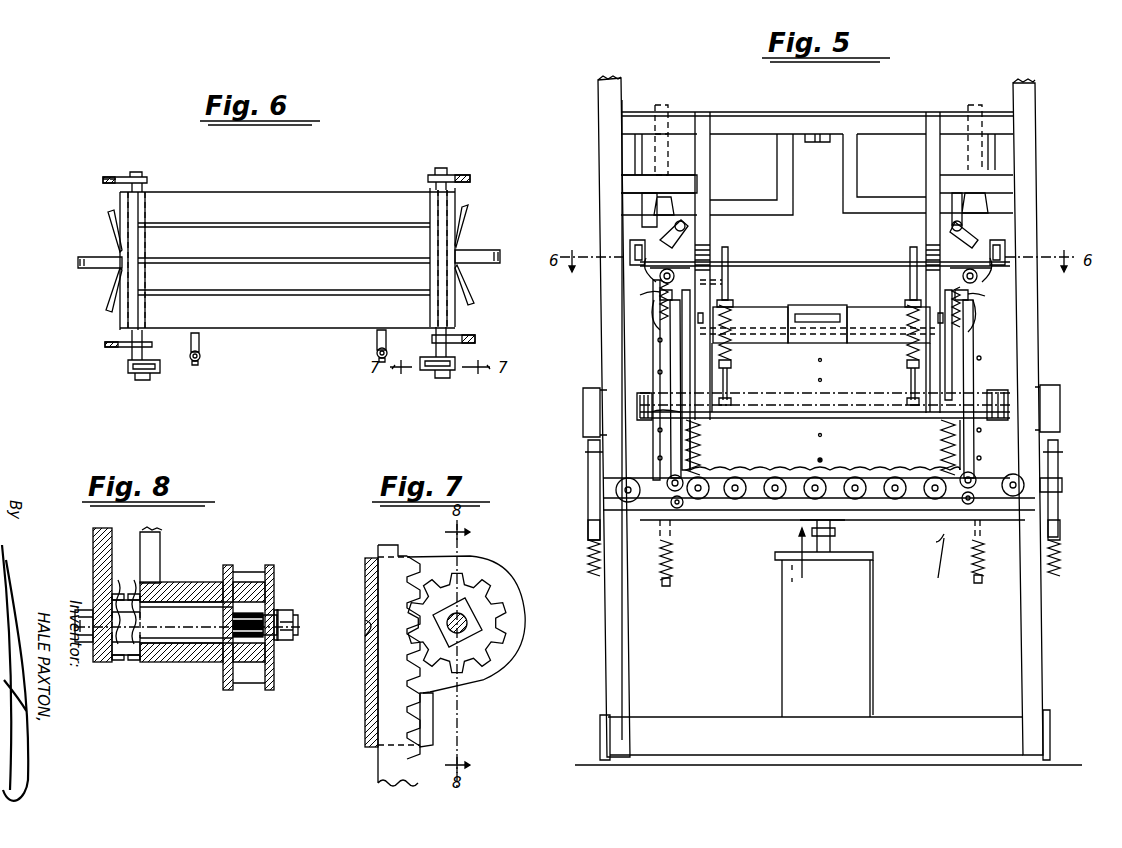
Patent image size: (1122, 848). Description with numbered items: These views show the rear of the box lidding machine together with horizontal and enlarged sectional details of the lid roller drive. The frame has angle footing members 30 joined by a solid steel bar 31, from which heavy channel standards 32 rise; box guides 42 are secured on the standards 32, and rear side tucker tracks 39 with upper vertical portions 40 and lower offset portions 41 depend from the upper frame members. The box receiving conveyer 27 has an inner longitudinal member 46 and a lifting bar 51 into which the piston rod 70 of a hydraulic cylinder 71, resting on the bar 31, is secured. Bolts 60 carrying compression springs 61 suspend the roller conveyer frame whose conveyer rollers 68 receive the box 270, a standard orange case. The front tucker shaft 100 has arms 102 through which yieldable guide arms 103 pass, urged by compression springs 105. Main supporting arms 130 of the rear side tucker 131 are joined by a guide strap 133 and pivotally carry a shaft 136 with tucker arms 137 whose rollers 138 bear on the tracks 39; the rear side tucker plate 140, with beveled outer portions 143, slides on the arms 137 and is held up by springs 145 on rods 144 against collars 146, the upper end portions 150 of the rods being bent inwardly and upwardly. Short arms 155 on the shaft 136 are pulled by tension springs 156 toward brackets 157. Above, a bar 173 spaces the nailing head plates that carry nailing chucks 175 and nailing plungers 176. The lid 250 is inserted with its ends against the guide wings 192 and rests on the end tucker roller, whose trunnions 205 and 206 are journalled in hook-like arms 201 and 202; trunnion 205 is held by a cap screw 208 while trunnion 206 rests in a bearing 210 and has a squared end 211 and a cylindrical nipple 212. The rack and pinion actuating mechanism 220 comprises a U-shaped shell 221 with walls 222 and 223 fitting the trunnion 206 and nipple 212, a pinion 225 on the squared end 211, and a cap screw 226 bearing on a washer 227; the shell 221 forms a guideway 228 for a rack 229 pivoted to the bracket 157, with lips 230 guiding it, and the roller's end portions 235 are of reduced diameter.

In FIG. 5, the box receiving conveyer 27 is at (760, 558).
In FIG. 5, the angle footing members 30 is at (1046, 722).
In FIG. 5, the solid steel bar 31 is at (950, 724).
In FIG. 5, the channel standards 32 is at (1038, 598).
In FIG. 5, the rear side tucker tracks 39 is at (711, 158).
In FIG. 5, the upper vertical portions 40 is at (711, 186).
In FIG. 5, the lower offset portions 41 is at (726, 275).
In FIG. 5, the box guides 42 is at (1052, 404).
In FIG. 5, the inner longitudinal member 46 is at (730, 500).
In FIG. 5, the lifting bar 51 is at (766, 505).
In FIG. 5, the bolts 60 is at (670, 582).
In FIG. 5, the compression springs 61 is at (672, 560).
In FIG. 5, the conveyer rollers 68 is at (650, 468).
In FIG. 5, the piston rod 70 is at (835, 530).
In FIG. 5, the hydraulic cylinder 71 is at (872, 622).
In FIG. 5, the shaft 100 is at (1062, 484).
In FIG. 5, the arms 102 is at (1062, 560).
In FIG. 5, the yieldable guide arms 103 is at (1060, 470).
In FIG. 5, the compression springs 105 is at (1060, 542).
In FIG. 5, the main supporting arms 130 is at (668, 448).
In FIG. 5, the rear side tucker 131 is at (946, 563).
In FIG. 5, the guide strap 133 is at (782, 405).
In FIG. 5, the shaft 136 is at (788, 410).
In FIG. 5, the tucker arms 137 is at (692, 380).
In FIG. 5, the rollers 138 is at (733, 300).
In FIG. 5, the rear side tucker plate 140 is at (785, 307).
In FIG. 5, the outer portions 143 is at (668, 322).
In FIG. 5, the rods 144 is at (732, 366).
In FIG. 5, the springs 145 is at (732, 345).
In FIG. 5, the collars 146 is at (778, 312).
In FIG. 5, the upper end portions 150 is at (729, 256).
In FIG. 6, the upper end portions 150 is at (378, 332).
In FIG. 5, the short arms 155 is at (708, 418).
In FIG. 5, the tension springs 156 is at (702, 452).
In FIG. 5, the brackets 157 is at (692, 520).
In FIG. 5, the bar 173 is at (791, 168).
In FIG. 5, the nailing chucks 175 is at (975, 202).
In FIG. 5, the nailing plungers 176 is at (975, 110).
In FIG. 6, the guide wings 192 is at (466, 230).
In FIG. 6, the hook-like arm 201 is at (128, 178).
In FIG. 8, the hook-like arm 201 is at (93, 550).
In FIG. 5, the hook-like arm 202 is at (978, 234).
In FIG. 6, the hook-like arm 202 is at (115, 343).
In FIG. 8, the hook-like arm 202 is at (152, 548).
In FIG. 8, the trunnion 205 is at (120, 660).
In FIG. 8, the trunnion 206 is at (175, 600).
In FIG. 8, the cap screw 208 is at (76, 616).
In FIG. 8, the bearing 210 is at (205, 662).
In FIG. 8, the squared end 211 is at (270, 604).
In FIG. 7, the squared end 211 is at (452, 600).
In FIG. 8, the cylindrical nipple 212 is at (280, 612).
In FIG. 7, the cylindrical nipple 212 is at (448, 628).
In FIG. 5, the rack and pinion actuating mechanism 220 is at (819, 289).
In FIG. 7, the rack and pinion actuating mechanism 220 is at (495, 687).
In FIG. 7, the U-shaped shell 221 is at (365, 682).
In FIG. 8, the wall 222 is at (228, 565).
In FIG. 8, the wall 223 is at (269, 568).
In FIG. 7, the pinion 225 is at (485, 590).
In FIG. 8, the cap screw 226 is at (290, 620).
In FIG. 8, the washer 227 is at (278, 645).
In FIG. 7, the guideway 228 is at (370, 633).
In FIG. 5, the rack 229 is at (660, 378).
In FIG. 7, the rack 229 is at (385, 766).
In FIG. 7, the lips 230 is at (433, 722).
In FIG. 8, the end portions 235 is at (126, 590).
In FIG. 5, the lid 250 is at (808, 266).
In FIG. 6, the lid 250 is at (238, 200).
In FIG. 5, the box 270 is at (825, 415).